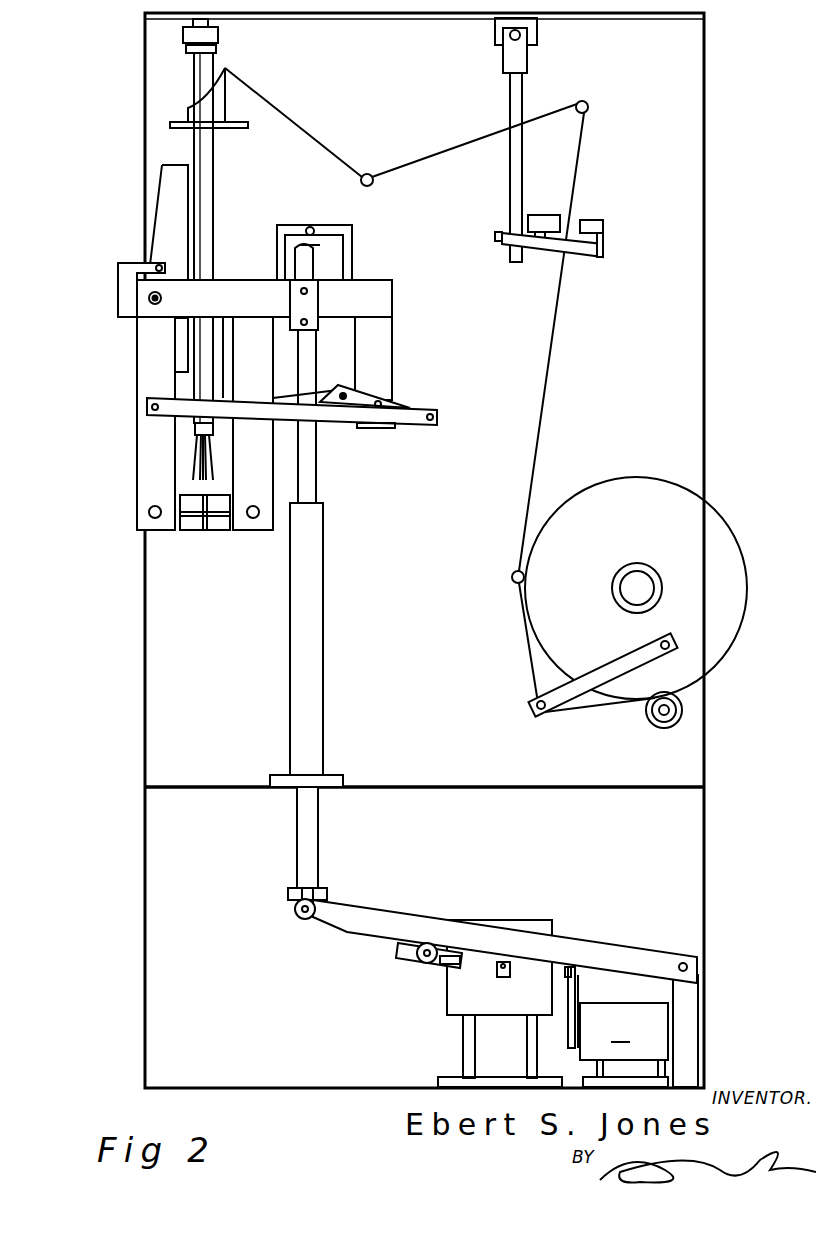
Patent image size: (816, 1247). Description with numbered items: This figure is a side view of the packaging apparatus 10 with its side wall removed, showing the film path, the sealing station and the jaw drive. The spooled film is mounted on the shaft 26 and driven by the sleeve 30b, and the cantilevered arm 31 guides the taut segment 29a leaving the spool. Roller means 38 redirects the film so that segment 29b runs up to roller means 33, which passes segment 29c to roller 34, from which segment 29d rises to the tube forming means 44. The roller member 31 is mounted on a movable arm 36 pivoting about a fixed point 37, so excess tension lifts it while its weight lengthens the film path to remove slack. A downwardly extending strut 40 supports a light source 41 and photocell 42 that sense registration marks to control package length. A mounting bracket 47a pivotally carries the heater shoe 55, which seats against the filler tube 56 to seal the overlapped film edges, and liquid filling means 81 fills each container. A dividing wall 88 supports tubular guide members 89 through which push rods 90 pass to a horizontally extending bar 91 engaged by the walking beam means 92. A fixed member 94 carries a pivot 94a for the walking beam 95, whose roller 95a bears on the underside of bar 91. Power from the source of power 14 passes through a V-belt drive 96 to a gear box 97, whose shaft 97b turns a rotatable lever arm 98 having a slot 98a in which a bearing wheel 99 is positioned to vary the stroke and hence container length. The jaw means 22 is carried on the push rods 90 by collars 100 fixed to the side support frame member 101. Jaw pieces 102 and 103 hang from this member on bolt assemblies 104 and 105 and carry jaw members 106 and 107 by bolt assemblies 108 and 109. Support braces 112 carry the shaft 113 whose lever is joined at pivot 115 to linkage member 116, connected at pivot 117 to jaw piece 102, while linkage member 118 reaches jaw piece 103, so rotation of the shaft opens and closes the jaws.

The packaging apparatus 10 is at (89, 816).
The source of power 14 is at (624, 1040).
The jaw means 22 is at (119, 396).
The shaft 26 is at (636, 583).
The film segment 29a is at (597, 706).
The film segment 29b is at (562, 381).
The film segment 29c is at (452, 163).
The film segment 29d is at (308, 136).
The sleeve 30b is at (690, 712).
The cantilevered arm 31 is at (540, 712).
The roller means 33 is at (588, 104).
The roller 34 is at (373, 176).
The movable arm 36 is at (596, 663).
The pivot point 37 is at (680, 643).
The roller means 38 is at (510, 578).
The strut 40 is at (510, 91).
The light source 41 is at (595, 222).
The photocell 42 is at (541, 215).
The tube forming means 44 is at (122, 98).
The mounting bracket 47a is at (135, 266).
The heater shoe 55 is at (172, 203).
The filler tube 56 is at (210, 172).
The liquid filling means 81 is at (190, 458).
The dividing wall 88 is at (190, 787).
The tubular guide member 89 is at (320, 770).
The push rod 90 is at (318, 850).
The horizontally extending bar 91 is at (285, 895).
The walking beam means 92 is at (290, 985).
The fixed member 94 is at (690, 1040).
The pivot 94a is at (698, 963).
The walking beam 95 is at (600, 957).
The roller 95a is at (295, 916).
The V-belt drive 96 is at (575, 995).
The gear box 97 is at (445, 1000).
The shaft 97b is at (500, 972).
The rotatable lever arm 98 is at (412, 960).
The slot 98a is at (450, 952).
The bearing wheel 99 is at (428, 946).
The collar 100 is at (318, 330).
The side support frame member 101 is at (375, 302).
The jaw piece 102 is at (143, 342).
The jaw piece 103 is at (258, 485).
The bolt assembly 104 is at (150, 298).
The bolt assembly 105 is at (253, 292).
The jaw member 106 is at (190, 532).
The jaw member 107 is at (218, 535).
The bolt assembly 108 is at (150, 513).
The bolt assembly 109 is at (254, 518).
The support brace 112 is at (378, 350).
The shaft 113 is at (385, 400).
The pivot 115 is at (440, 418).
The linkage member 116 is at (348, 432).
The pivot 117 is at (150, 406).
The linkage member 118 is at (326, 394).